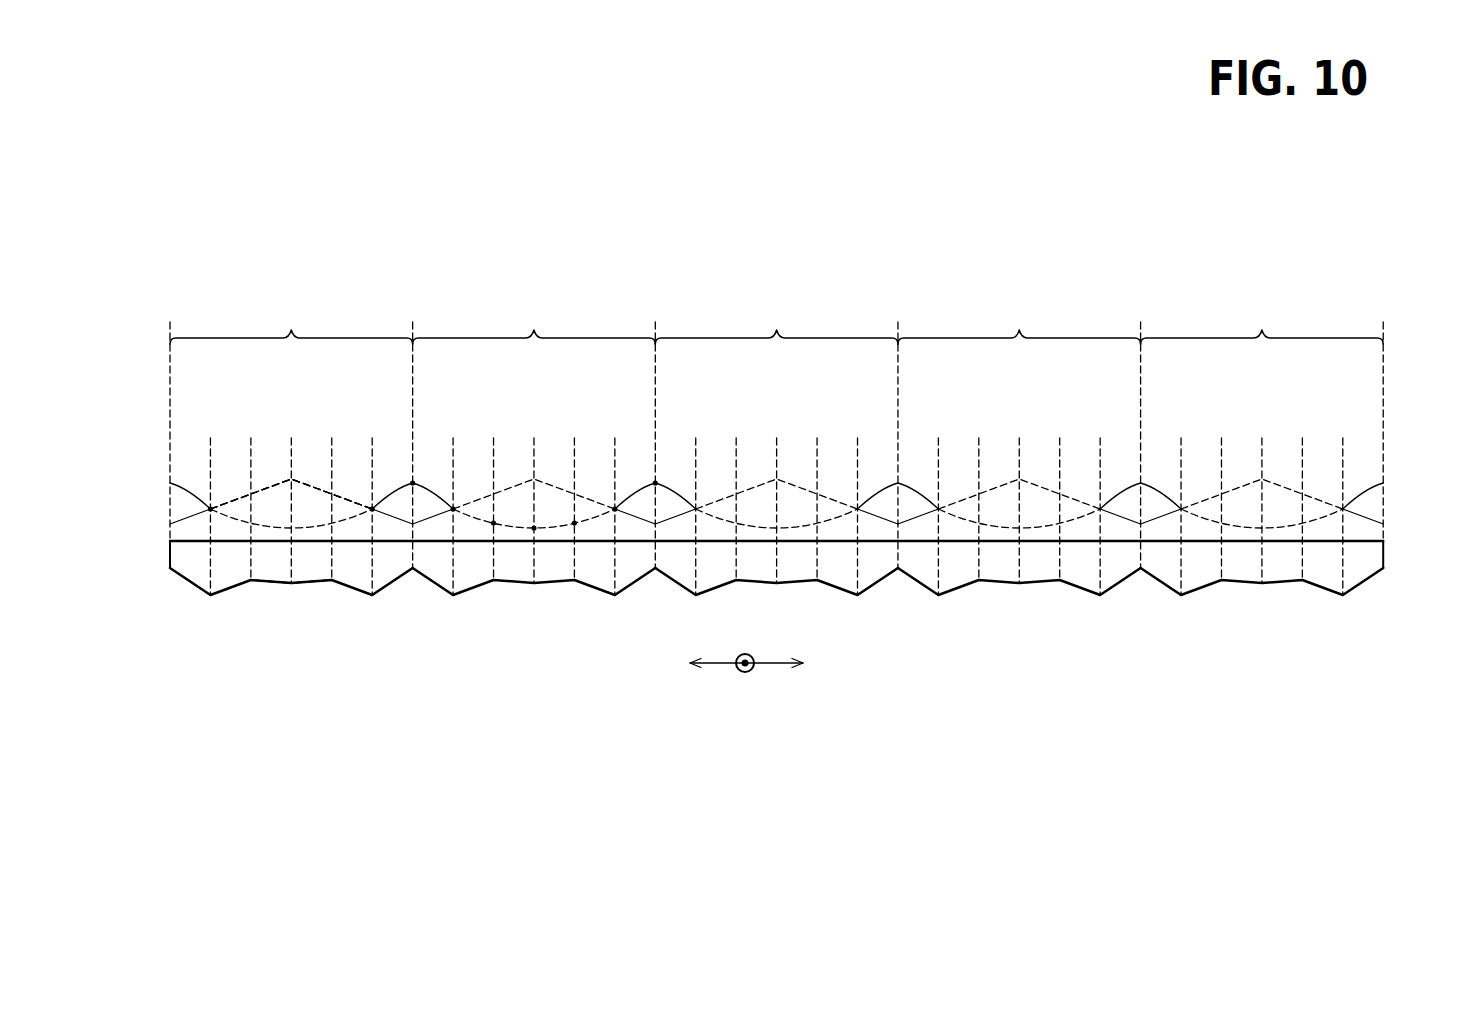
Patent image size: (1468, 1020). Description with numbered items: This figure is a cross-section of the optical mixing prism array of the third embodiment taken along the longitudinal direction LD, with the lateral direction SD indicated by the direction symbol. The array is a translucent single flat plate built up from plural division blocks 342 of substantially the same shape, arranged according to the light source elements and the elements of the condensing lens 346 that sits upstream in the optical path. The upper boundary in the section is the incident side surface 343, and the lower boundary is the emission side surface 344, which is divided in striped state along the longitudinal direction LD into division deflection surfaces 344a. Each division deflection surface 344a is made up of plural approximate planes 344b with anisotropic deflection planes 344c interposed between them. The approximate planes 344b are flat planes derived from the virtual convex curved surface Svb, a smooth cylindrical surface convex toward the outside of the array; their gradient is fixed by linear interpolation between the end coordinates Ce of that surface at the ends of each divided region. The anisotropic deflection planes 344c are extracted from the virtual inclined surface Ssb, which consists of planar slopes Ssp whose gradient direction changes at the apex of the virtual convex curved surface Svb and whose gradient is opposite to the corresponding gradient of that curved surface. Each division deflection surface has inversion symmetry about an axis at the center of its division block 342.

The condensing lens 346 is at (200, 305).
The division block 342 is at (776, 431).
The incident side surface 343 is at (1363, 539).
The emission side surface 344 is at (1363, 582).
The division deflection surface 344a is at (263, 583).
The approximate plane 344b is at (310, 583).
The anisotropic deflection plane 344c is at (224, 593).
The virtual convex curved surface Svb is at (185, 495).
The virtual inclined surface Ssb is at (263, 526).
The planar slope Ssp is at (281, 488).
The end coordinate Ce is at (413, 483).
The lateral direction SD is at (743, 673).
The longitudinal direction LD is at (770, 667).